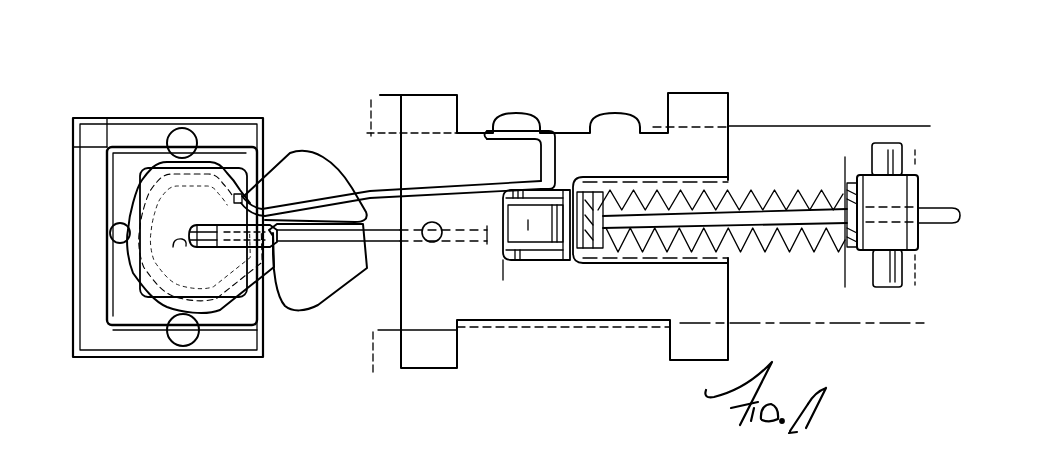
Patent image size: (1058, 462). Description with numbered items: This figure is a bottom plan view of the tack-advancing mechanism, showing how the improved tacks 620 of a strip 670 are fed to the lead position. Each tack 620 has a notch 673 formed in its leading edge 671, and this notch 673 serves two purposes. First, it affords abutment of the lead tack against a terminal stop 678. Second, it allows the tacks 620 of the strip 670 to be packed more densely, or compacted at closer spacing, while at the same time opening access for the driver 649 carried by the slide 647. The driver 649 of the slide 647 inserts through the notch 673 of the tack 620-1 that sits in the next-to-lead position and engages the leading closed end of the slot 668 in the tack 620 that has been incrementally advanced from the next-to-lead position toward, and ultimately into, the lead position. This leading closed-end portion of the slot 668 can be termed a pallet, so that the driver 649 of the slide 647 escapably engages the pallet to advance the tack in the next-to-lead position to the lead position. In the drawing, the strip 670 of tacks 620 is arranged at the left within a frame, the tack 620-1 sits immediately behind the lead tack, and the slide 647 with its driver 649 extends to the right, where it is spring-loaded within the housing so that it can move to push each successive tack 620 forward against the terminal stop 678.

The tack 620 is at (200, 216).
The tack in the next-to-lead position 620-1 is at (285, 306).
The slide 647 is at (477, 305).
The driver 649 is at (215, 248).
The slot 668 is at (329, 260).
The strip 670 is at (297, 140).
The leading edge 671 is at (168, 253).
The notch 673 is at (162, 207).
The terminal stop 678 is at (112, 226).